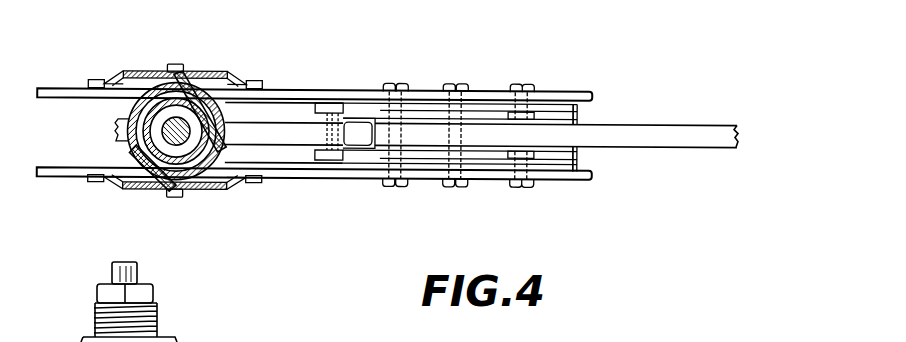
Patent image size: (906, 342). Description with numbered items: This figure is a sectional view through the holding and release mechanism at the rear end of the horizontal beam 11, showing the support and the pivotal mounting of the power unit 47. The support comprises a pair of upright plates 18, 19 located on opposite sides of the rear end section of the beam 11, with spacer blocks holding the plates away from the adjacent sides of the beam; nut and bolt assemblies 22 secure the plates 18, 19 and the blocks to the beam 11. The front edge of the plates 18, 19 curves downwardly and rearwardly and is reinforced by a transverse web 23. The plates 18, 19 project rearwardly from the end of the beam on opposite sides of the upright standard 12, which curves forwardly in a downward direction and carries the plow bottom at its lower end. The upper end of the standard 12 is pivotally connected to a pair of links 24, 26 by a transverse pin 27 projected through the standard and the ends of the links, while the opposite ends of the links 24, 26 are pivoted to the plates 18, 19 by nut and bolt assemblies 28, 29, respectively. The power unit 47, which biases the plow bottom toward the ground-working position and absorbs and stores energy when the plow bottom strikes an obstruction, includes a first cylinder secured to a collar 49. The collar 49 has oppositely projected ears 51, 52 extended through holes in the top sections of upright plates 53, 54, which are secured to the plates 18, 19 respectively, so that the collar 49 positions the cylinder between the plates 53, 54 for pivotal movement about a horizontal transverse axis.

The horizontal beam 11 is at (660, 133).
The upright standard 12 is at (282, 137).
The upright plate 18 is at (292, 90).
The upright plate 19 is at (313, 178).
The nut and bolt assemblies 22 is at (453, 82).
The transverse web 23 is at (572, 156).
The link 24 is at (485, 157).
The link 26 is at (482, 108).
The transverse pin 27 is at (335, 102).
The nut and bolt assembly 28 is at (522, 80).
The nut and bolt assembly 29 is at (528, 187).
The power unit 47 is at (116, 104).
The collar 49 is at (198, 82).
The ear 51 is at (180, 65).
The ear 52 is at (176, 199).
The upright plate 53 is at (138, 72).
The upright plate 54 is at (128, 191).